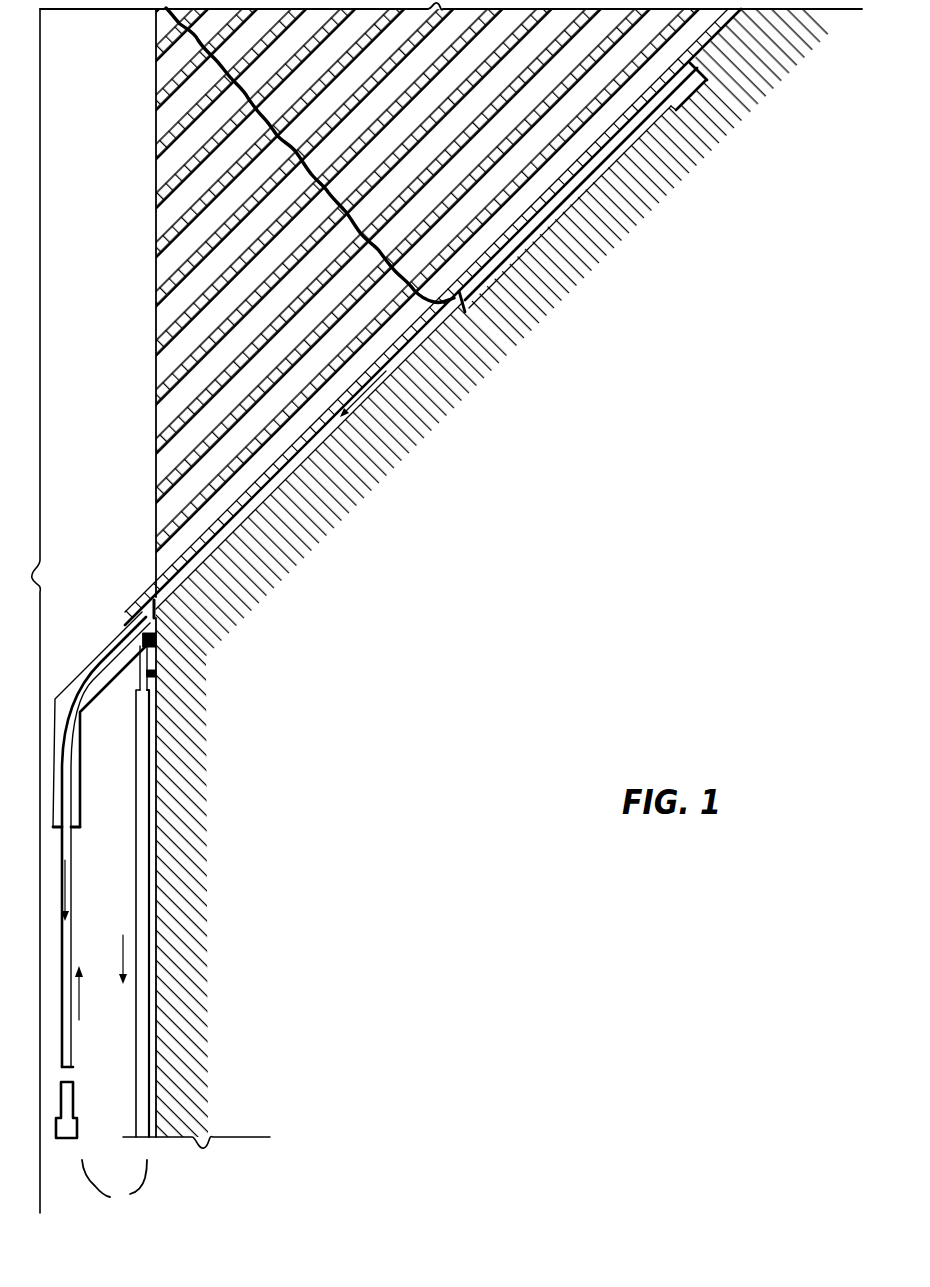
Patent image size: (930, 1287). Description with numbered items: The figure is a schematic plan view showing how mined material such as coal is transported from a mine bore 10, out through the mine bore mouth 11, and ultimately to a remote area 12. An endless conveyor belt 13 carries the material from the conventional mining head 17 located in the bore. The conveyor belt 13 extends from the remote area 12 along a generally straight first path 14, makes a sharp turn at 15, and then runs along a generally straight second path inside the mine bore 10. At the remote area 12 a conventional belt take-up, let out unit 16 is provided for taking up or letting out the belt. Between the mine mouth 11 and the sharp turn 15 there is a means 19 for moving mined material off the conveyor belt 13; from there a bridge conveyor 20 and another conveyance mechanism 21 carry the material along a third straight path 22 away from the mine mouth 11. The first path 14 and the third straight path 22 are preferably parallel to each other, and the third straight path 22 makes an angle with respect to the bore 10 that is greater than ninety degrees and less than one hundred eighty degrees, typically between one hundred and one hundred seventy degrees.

The mine bore 10 is at (591, 193).
The mine bore mouth 11 is at (155, 606).
The remote area 12 is at (114, 1182).
The endless conveyor belt 13 is at (392, 372).
The first path 14 is at (80, 1003).
The sharp turn 15 is at (61, 685).
The belt take-up, let out unit 16 is at (73, 1126).
The mining head 17 is at (689, 78).
The means for moving mined material off the conveyor belt 19 is at (157, 643).
The bridge conveyor 20 is at (158, 675).
The conveyance mechanism 21 is at (153, 847).
The third straight path 22 is at (122, 942).